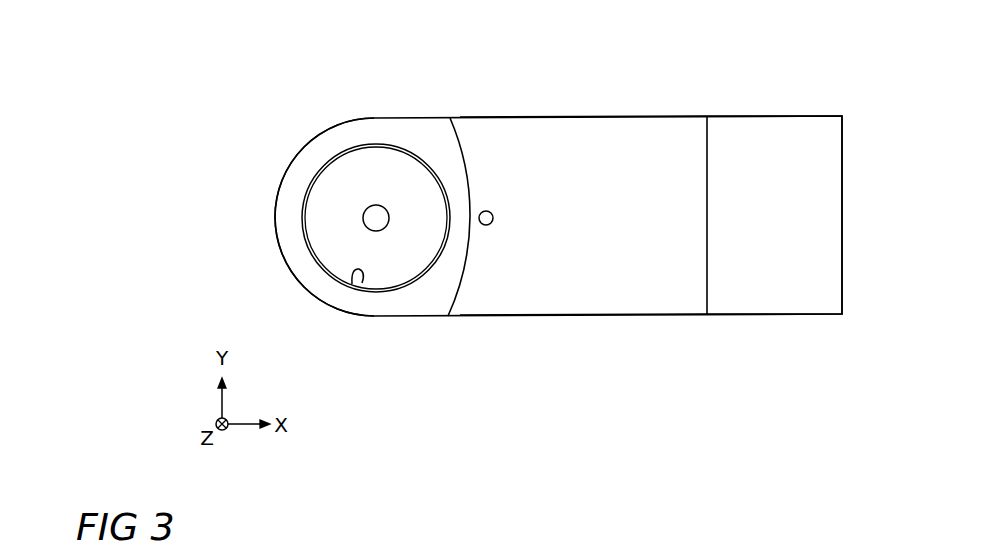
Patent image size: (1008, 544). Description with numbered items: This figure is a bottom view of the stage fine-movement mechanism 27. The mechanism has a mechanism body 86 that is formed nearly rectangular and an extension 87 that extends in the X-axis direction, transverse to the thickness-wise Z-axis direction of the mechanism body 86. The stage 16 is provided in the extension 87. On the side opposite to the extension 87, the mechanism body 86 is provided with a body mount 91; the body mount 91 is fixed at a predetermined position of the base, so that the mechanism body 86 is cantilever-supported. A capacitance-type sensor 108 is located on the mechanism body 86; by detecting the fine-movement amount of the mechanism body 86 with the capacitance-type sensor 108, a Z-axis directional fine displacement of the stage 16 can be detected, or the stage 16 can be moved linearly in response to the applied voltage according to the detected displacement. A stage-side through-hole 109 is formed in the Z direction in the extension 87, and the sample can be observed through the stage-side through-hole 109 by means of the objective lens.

The stage fine-movement mechanism 27 is at (765, 96).
The stage 16 is at (337, 190).
The extension 87 is at (399, 302).
The stage-side through-hole 109 is at (352, 284).
The capacitance-type sensor 108 is at (488, 225).
The mechanism body 86 is at (639, 299).
The body mount 91 is at (812, 297).